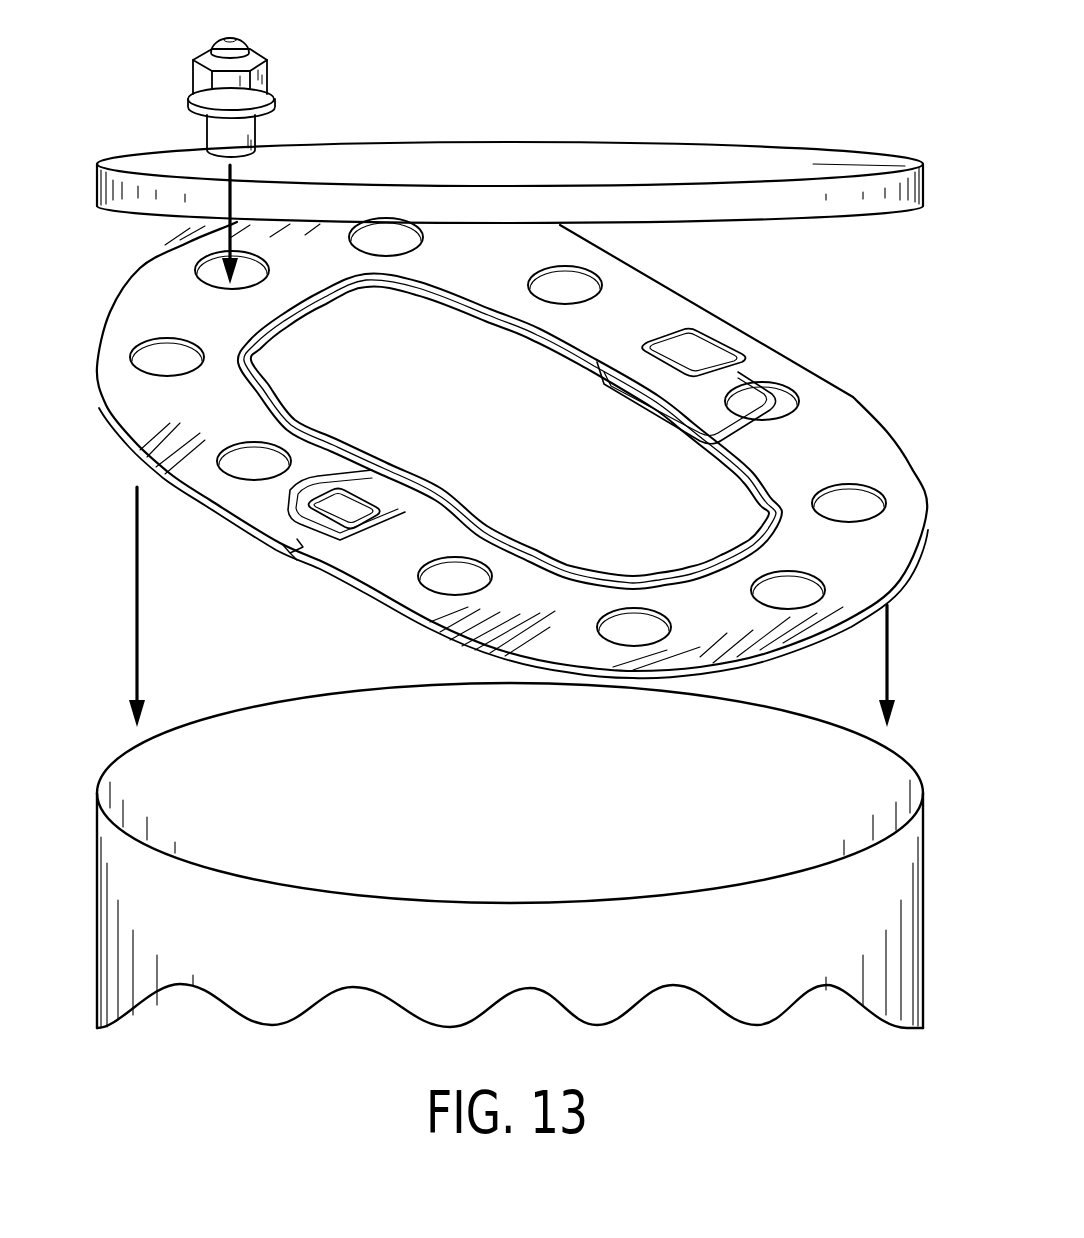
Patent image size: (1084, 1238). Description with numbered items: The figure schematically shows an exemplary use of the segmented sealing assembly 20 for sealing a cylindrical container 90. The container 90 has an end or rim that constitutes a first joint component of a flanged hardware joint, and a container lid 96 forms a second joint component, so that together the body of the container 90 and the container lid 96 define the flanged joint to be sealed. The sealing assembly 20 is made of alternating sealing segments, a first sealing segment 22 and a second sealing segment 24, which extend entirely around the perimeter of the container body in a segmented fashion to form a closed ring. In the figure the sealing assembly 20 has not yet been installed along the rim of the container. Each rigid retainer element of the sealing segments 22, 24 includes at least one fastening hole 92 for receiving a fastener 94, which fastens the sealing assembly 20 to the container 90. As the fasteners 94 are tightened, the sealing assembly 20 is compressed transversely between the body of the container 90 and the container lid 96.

The segmented sealing assembly 20 is at (92, 297).
The first sealing segment 22 is at (158, 405).
The second sealing segment 24 is at (845, 426).
The container 90 is at (122, 850).
The fastening hole 92 is at (196, 280).
The fastener 94 is at (214, 131).
The container lid 96 is at (908, 190).